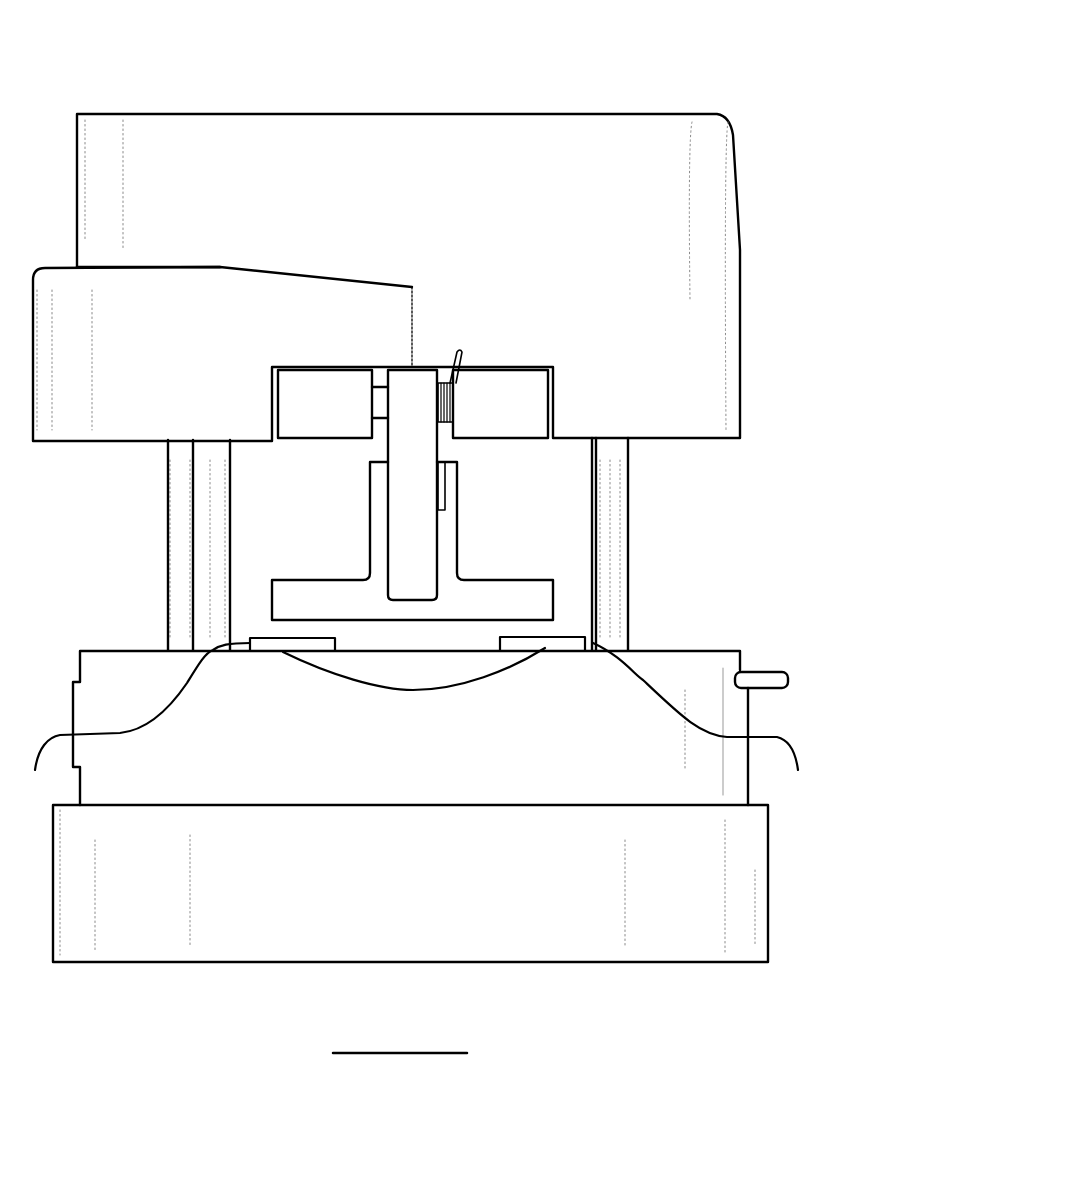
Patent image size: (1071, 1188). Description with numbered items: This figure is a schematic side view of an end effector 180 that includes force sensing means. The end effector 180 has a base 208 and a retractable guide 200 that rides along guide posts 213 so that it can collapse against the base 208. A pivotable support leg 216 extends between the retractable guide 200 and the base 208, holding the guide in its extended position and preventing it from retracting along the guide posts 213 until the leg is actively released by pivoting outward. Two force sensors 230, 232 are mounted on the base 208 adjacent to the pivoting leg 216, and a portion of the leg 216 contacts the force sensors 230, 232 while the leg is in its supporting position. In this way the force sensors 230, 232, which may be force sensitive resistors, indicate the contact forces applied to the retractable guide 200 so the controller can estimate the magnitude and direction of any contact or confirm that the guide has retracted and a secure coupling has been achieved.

The end effector 180 is at (706, 72).
The retractable guide 200 is at (720, 245).
The base 208 is at (730, 772).
The guide posts 213 is at (205, 488).
The support leg 216 is at (428, 442).
The force sensor 230 is at (258, 642).
The force sensor 232 is at (547, 642).